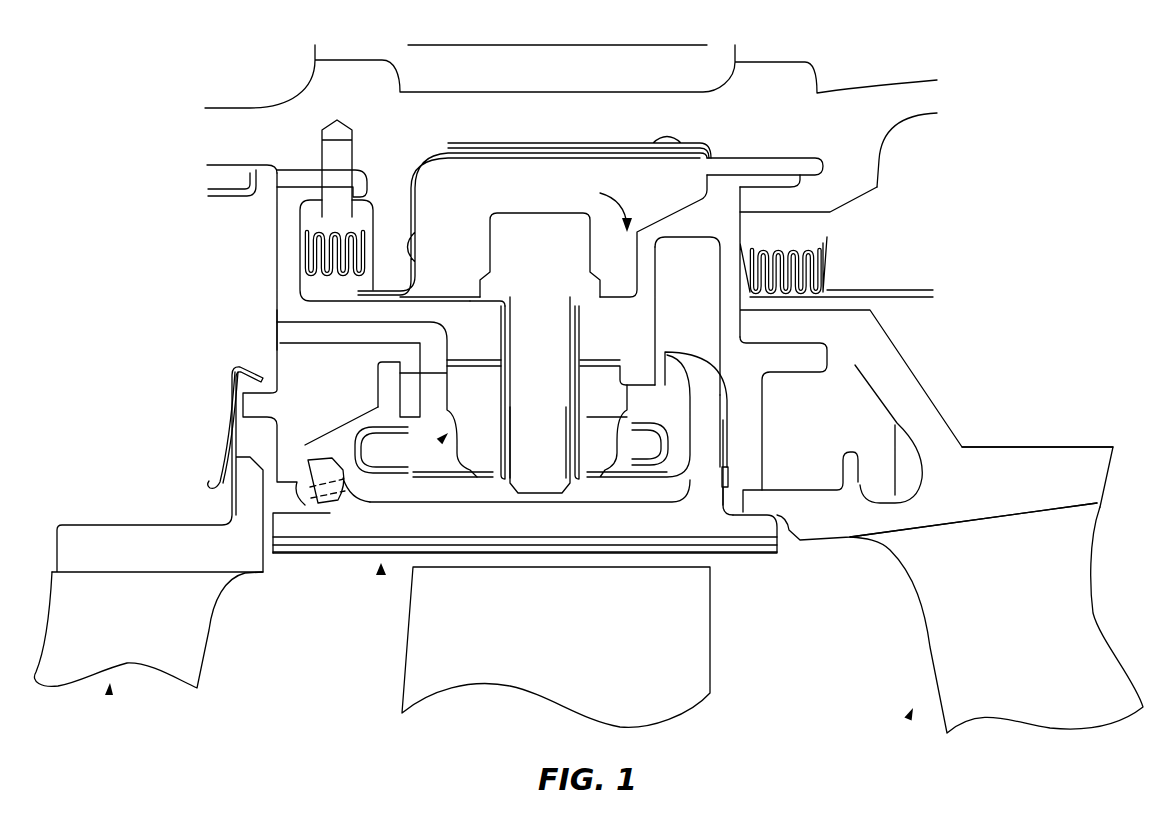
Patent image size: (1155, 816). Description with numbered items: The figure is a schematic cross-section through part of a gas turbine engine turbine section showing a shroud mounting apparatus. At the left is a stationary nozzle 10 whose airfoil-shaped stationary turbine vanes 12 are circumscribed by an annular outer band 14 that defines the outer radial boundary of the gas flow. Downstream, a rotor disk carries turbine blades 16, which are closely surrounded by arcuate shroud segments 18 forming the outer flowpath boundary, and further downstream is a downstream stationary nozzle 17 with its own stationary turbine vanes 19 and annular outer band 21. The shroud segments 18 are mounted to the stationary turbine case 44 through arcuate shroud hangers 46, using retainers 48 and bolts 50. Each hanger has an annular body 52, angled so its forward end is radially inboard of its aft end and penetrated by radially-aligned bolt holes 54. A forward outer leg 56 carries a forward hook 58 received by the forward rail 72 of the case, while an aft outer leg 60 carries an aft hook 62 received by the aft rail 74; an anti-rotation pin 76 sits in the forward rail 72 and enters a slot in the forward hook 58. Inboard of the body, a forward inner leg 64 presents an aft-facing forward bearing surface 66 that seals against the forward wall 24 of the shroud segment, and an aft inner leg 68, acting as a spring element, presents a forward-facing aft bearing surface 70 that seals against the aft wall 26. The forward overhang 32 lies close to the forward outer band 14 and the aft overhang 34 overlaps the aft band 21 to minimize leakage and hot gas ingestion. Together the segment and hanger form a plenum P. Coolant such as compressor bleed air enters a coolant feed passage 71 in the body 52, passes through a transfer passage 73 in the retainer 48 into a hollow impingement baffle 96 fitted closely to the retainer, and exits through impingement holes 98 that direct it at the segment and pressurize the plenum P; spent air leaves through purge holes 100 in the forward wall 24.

The stationary nozzle 10 is at (109, 688).
The stationary turbine vanes 12 is at (124, 623).
The annular outer band 14 is at (124, 561).
The turbine blades 16 is at (549, 635).
The downstream stationary nozzle 17 is at (910, 713).
The shroud segments 18 is at (380, 568).
The stationary turbine vanes 19 is at (979, 616).
The annular outer band 21 is at (979, 501).
The forward wall 24 is at (313, 447).
The aft wall 26 is at (708, 437).
The forward overhang 32 is at (290, 525).
The aft overhang 34 is at (753, 527).
The turbine case 44 is at (817, 92).
The shroud hangers 46 is at (603, 203).
The retainers 48 is at (445, 437).
The bolts 50 is at (529, 259).
The annular body 52 is at (602, 340).
The bolt holes 54 is at (493, 320).
The forward outer leg 56 is at (275, 262).
The forward hook 58 is at (293, 172).
The aft outer leg 60 is at (665, 230).
The aft hook 62 is at (741, 170).
The forward inner leg 64 is at (310, 396).
The forward bearing surface 66 is at (300, 501).
The aft inner leg 68 is at (753, 383).
The aft bearing surface 70 is at (729, 476).
The coolant feed passages 71 is at (278, 330).
The forward rail 72 is at (362, 172).
The transfer passage 73 is at (440, 380).
The aft rail 74 is at (793, 198).
The anti-rotation pin 76 is at (338, 153).
The impingement baffle 96 is at (668, 413).
The impingement holes 98 is at (418, 479).
The purge holes 100 is at (327, 503).
The plenum P is at (703, 270).